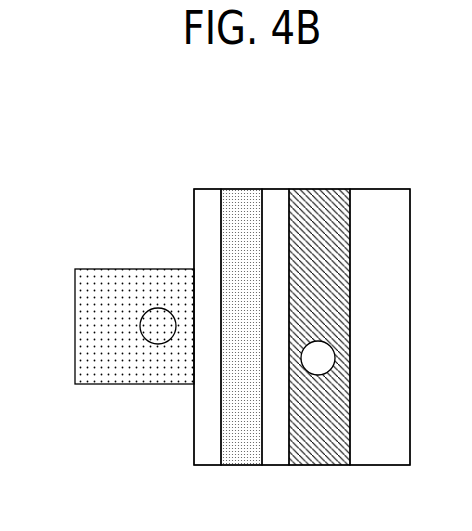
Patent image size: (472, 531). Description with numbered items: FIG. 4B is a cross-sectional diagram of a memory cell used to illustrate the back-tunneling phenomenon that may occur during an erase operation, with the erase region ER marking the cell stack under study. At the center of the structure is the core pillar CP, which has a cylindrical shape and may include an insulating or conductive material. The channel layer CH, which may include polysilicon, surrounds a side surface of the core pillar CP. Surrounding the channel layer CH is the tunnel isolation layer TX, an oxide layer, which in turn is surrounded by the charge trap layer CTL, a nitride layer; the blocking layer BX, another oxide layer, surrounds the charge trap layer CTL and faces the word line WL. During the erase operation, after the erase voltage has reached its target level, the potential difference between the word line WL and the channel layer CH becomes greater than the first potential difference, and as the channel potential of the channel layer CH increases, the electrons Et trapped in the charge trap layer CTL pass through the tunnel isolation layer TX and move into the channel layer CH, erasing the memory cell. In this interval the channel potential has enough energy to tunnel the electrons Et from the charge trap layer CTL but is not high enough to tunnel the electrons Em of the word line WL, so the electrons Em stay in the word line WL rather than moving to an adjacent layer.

The erase region / memory cell structure ER is at (77, 151).
The blocking layer BX is at (204, 198).
The charge trap layer CTL is at (243, 198).
The tunnel isolation layer TX is at (283, 198).
The channel layer CH is at (322, 198).
The core pillar CP is at (385, 198).
The word line WL is at (82, 310).
The electrons of the word lines Em is at (158, 326).
The electrons trapped in the charge trap layer Et is at (243, 305).